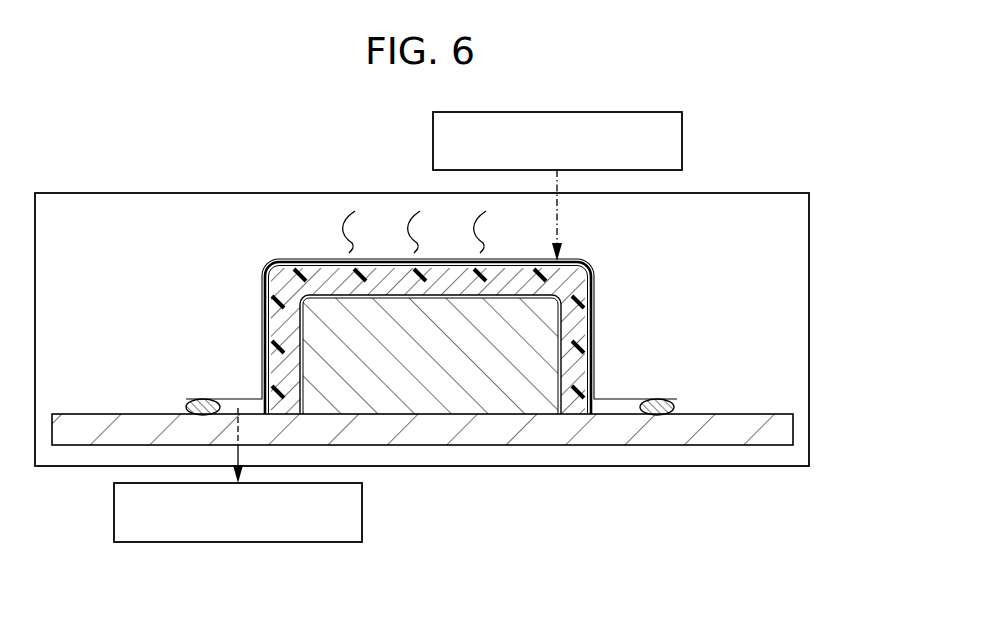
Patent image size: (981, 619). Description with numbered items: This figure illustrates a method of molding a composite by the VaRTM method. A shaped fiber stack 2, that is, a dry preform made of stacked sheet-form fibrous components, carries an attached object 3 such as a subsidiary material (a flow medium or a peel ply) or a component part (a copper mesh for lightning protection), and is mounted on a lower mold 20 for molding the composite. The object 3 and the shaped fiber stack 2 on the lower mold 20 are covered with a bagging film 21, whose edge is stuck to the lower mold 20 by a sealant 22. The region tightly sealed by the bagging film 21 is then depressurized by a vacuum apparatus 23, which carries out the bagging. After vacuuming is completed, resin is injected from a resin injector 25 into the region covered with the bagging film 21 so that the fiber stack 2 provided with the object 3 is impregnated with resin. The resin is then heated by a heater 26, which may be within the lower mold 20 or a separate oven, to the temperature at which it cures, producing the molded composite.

The fiber stack 2 is at (290, 318).
The object 3 is at (315, 270).
The lower mold 20 is at (438, 393).
The bagging film 21 is at (615, 398).
The sealant 22 is at (665, 399).
The vacuum apparatus 23 is at (114, 513).
The resin injector 25 is at (682, 144).
The heater 26 is at (748, 466).